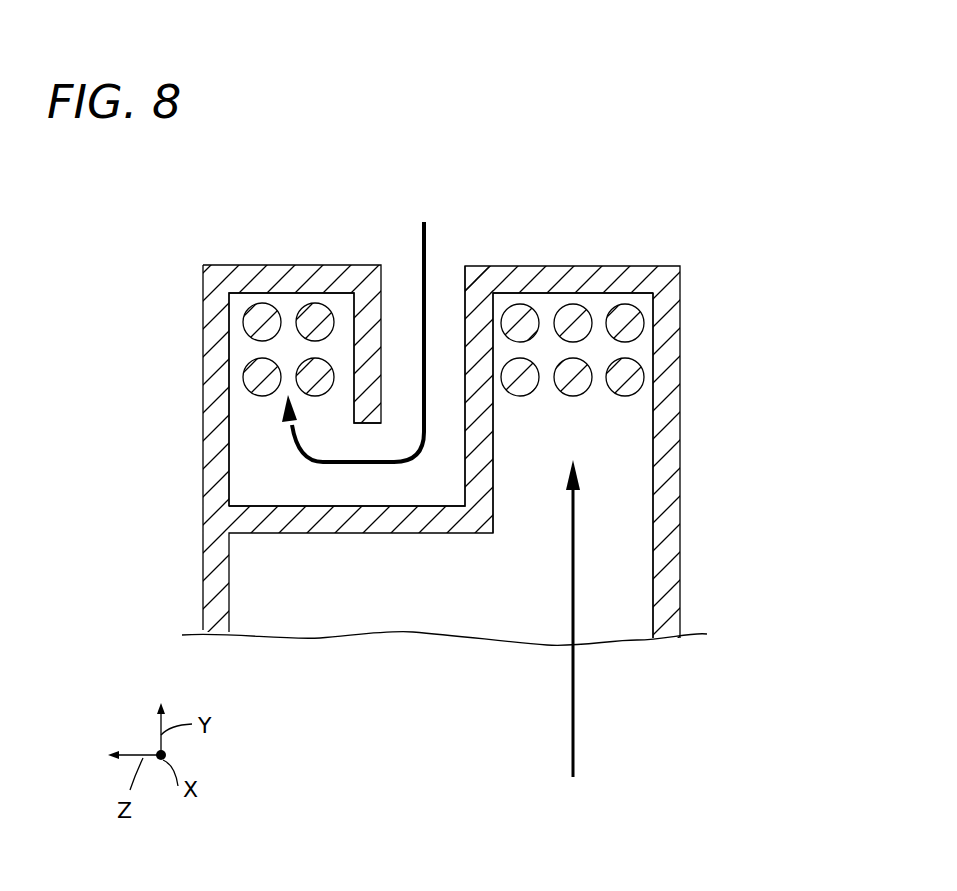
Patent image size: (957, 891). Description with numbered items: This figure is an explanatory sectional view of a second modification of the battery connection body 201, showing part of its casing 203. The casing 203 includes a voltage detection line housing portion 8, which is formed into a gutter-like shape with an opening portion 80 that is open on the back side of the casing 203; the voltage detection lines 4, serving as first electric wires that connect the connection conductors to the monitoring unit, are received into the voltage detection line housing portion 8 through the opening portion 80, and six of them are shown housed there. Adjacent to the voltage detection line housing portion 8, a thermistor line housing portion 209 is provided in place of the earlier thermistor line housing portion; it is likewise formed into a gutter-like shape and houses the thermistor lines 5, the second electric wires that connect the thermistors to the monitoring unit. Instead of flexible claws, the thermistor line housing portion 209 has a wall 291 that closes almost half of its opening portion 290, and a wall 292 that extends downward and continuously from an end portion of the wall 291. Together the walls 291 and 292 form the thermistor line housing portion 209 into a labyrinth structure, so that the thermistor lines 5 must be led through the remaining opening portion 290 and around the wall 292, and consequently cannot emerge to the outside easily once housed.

The battery connection body 201 is at (740, 162).
The casing 203 is at (650, 264).
The wall 291 is at (299, 278).
The wall 292 is at (372, 357).
The opening portion 290 is at (403, 290).
The thermistor line housing portion 209 is at (258, 465).
The thermistor lines 5 is at (248, 372).
The voltage detection lines 4 is at (640, 367).
The voltage detection line housing portion 8 is at (630, 490).
The opening portion 80 is at (469, 598).